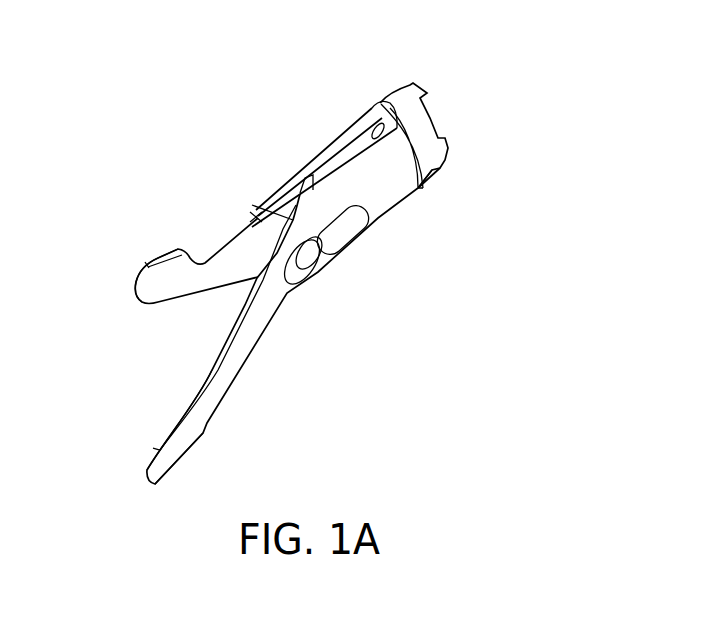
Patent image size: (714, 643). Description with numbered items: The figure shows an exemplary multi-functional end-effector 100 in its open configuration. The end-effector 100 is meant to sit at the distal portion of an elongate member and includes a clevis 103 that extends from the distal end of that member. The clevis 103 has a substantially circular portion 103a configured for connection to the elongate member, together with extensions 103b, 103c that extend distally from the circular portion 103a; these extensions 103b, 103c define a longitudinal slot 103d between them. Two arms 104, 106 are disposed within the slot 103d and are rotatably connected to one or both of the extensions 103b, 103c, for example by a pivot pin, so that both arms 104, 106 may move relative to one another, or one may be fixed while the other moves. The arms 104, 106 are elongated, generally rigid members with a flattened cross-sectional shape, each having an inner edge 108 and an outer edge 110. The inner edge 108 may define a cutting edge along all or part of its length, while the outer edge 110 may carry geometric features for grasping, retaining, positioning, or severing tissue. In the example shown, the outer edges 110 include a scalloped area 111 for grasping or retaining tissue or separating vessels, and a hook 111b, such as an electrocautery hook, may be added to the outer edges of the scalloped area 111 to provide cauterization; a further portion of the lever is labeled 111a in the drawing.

The multi-functional end-effector 100 is at (256, 72).
The clevis 103 is at (371, 96).
The substantially circular portion 103a is at (386, 102).
The extension 103b is at (318, 248).
The extension 103c is at (370, 204).
The longitudinal slot 103d is at (417, 188).
The arm 104 is at (258, 218).
The arm 106 is at (267, 312).
The inner edge 108 is at (183, 418).
The outer edge 110 is at (178, 460).
The scalloped area 111 is at (223, 246).
The lever arm 111a is at (254, 238).
The hook 111b is at (183, 248).